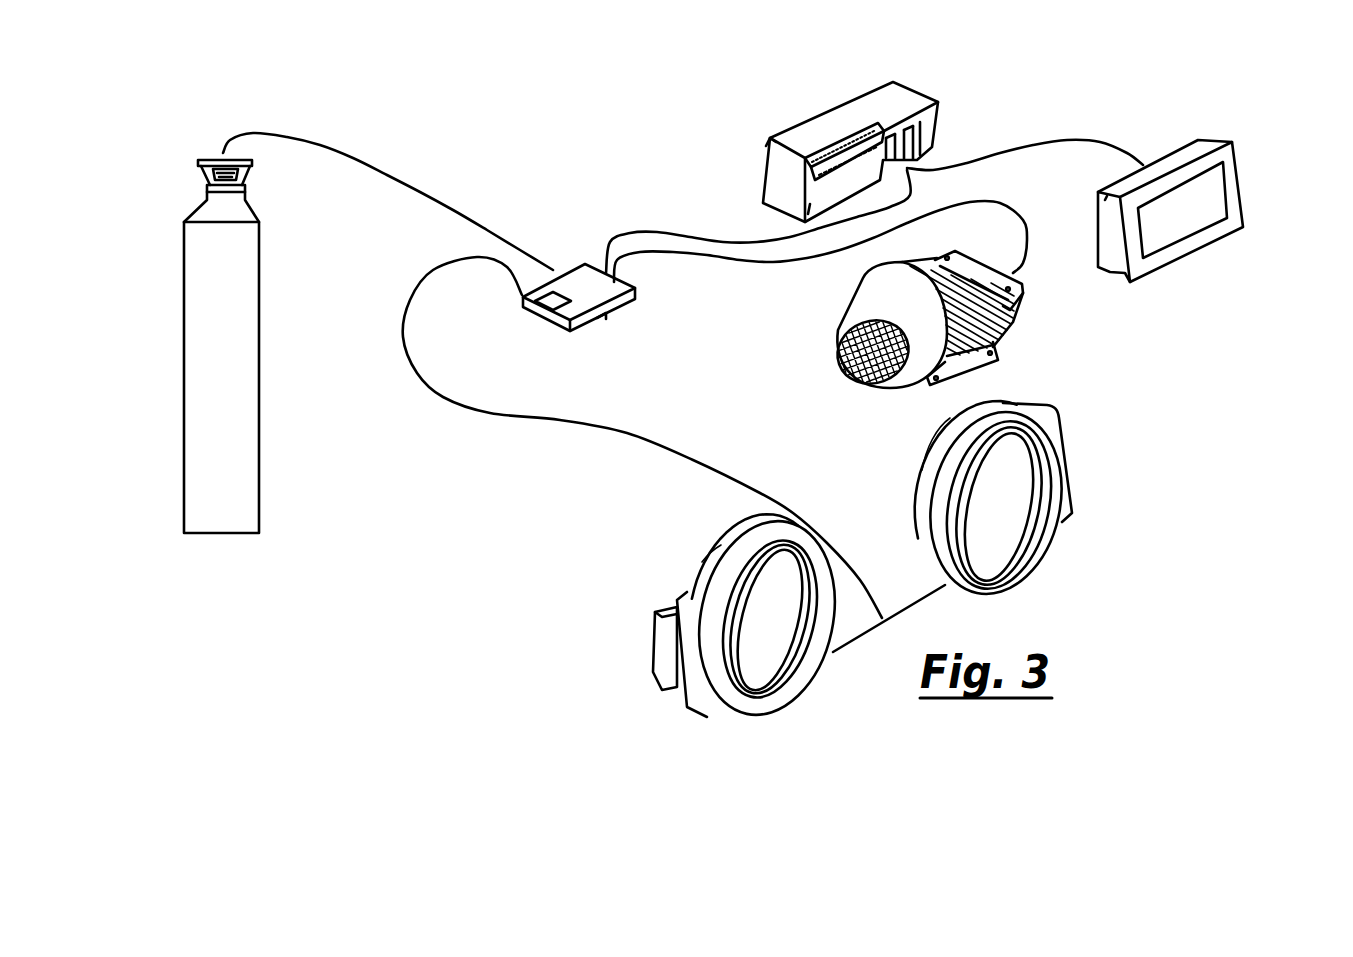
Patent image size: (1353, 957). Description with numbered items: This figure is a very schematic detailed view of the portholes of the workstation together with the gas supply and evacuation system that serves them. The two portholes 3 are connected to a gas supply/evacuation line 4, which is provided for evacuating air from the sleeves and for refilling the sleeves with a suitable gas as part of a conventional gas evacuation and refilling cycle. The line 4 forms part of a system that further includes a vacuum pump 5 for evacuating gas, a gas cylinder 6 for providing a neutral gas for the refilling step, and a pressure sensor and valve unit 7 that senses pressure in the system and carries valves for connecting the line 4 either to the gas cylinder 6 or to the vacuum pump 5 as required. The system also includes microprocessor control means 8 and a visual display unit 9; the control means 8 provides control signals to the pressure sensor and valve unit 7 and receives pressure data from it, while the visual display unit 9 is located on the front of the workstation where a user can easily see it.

The portholes 3 is at (768, 658).
The gas supply/evacuation line 4 is at (575, 428).
The vacuum pump 5 is at (1013, 320).
The gas cylinder 6 is at (207, 405).
The pressure sensor and valve unit 7 is at (574, 288).
The microprocessor control means 8 is at (888, 102).
The visual display unit 9 is at (1205, 198).